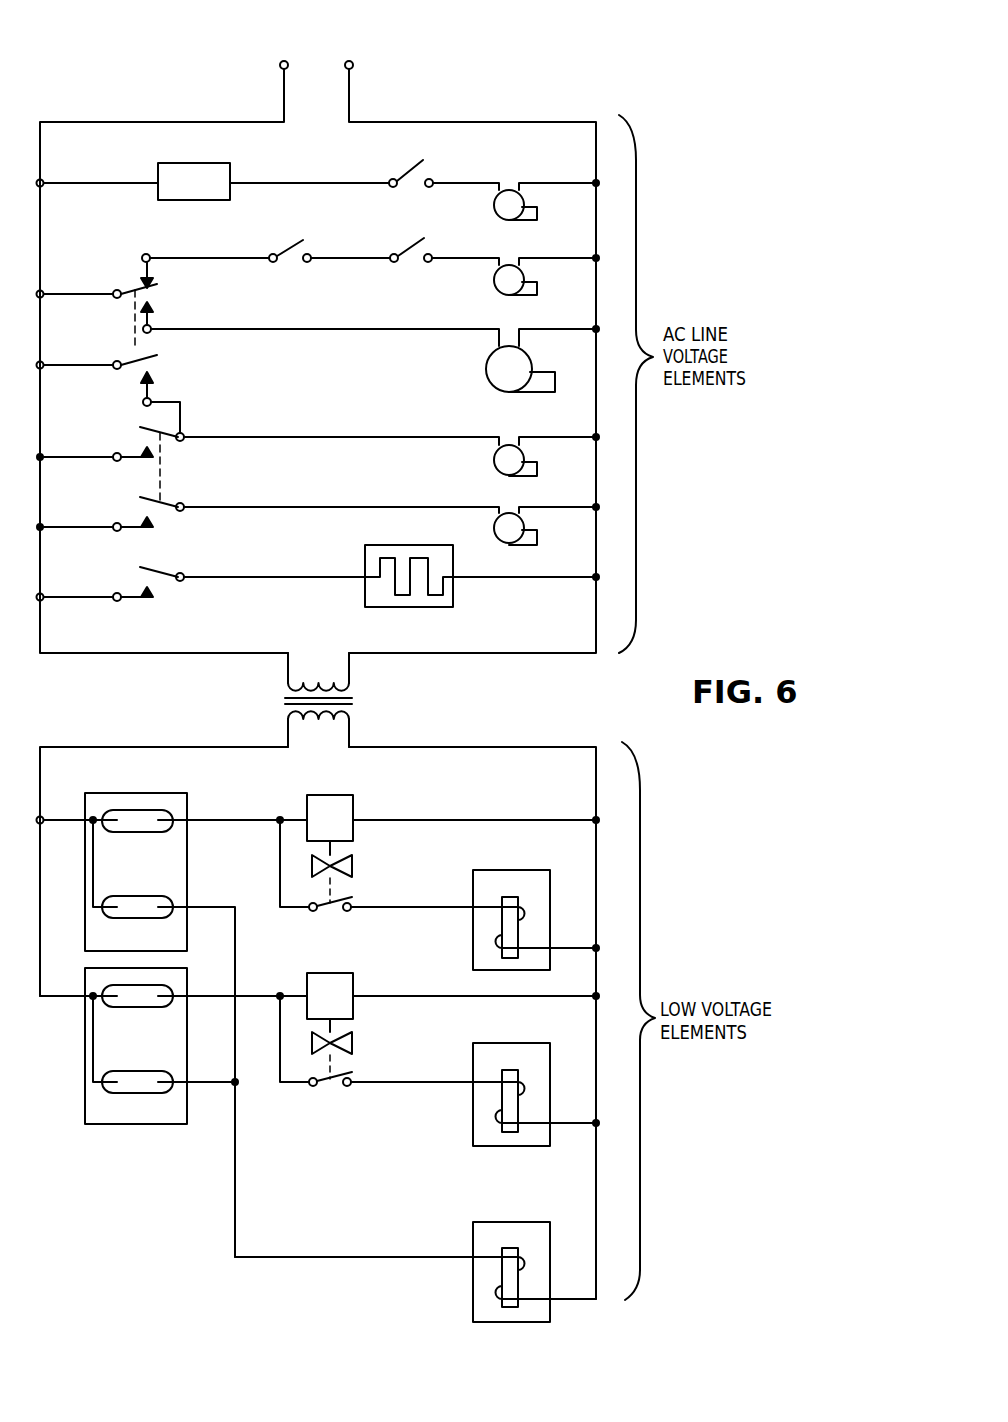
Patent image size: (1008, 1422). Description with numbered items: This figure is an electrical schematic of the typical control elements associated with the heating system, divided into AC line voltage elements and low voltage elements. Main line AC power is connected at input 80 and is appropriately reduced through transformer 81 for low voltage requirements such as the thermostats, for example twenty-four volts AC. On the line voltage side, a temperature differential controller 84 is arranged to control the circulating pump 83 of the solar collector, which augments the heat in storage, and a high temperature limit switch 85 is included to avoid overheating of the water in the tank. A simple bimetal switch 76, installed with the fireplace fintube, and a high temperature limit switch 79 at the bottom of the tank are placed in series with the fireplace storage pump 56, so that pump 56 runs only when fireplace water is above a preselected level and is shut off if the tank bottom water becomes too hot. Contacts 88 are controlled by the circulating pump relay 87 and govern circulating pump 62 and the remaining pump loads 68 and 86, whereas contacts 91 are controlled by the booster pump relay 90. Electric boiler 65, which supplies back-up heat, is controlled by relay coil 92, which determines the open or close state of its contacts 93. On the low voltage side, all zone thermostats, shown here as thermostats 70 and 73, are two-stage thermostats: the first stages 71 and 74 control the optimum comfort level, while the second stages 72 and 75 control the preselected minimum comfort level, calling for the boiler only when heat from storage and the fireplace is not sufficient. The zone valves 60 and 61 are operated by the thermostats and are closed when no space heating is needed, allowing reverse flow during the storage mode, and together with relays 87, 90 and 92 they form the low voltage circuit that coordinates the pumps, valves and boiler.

The input 80 is at (355, 50).
The temperature differential controller 84 is at (213, 181).
The high temperature limit switch 85 is at (407, 170).
The circulating pump 83 is at (494, 206).
The bimetal switch 76 is at (280, 248).
The high temperature limit switch 79 is at (401, 248).
The fireplace storage pump 56 is at (494, 286).
The contacts 88 is at (157, 312).
The motor 68 is at (486, 369).
The circulating pump 62 is at (494, 459).
The contacts 91 is at (172, 495).
The motor 86 is at (494, 527).
The electric boiler 65 is at (365, 559).
The contacts 93 is at (158, 583).
The transformer 81 is at (358, 701).
The zone thermostat 70 is at (110, 793).
The first stage 71 is at (145, 810).
The second stage 72 is at (160, 897).
The zone thermostat 73 is at (170, 1124).
The first stage 74 is at (163, 1004).
The second stage 75 is at (108, 1091).
The zone valve 60 is at (355, 864).
The zone valve 61 is at (355, 1041).
The circulating pump relay 87 is at (490, 870).
The booster pump relay 90 is at (490, 1043).
The relay coil 92 is at (490, 1222).